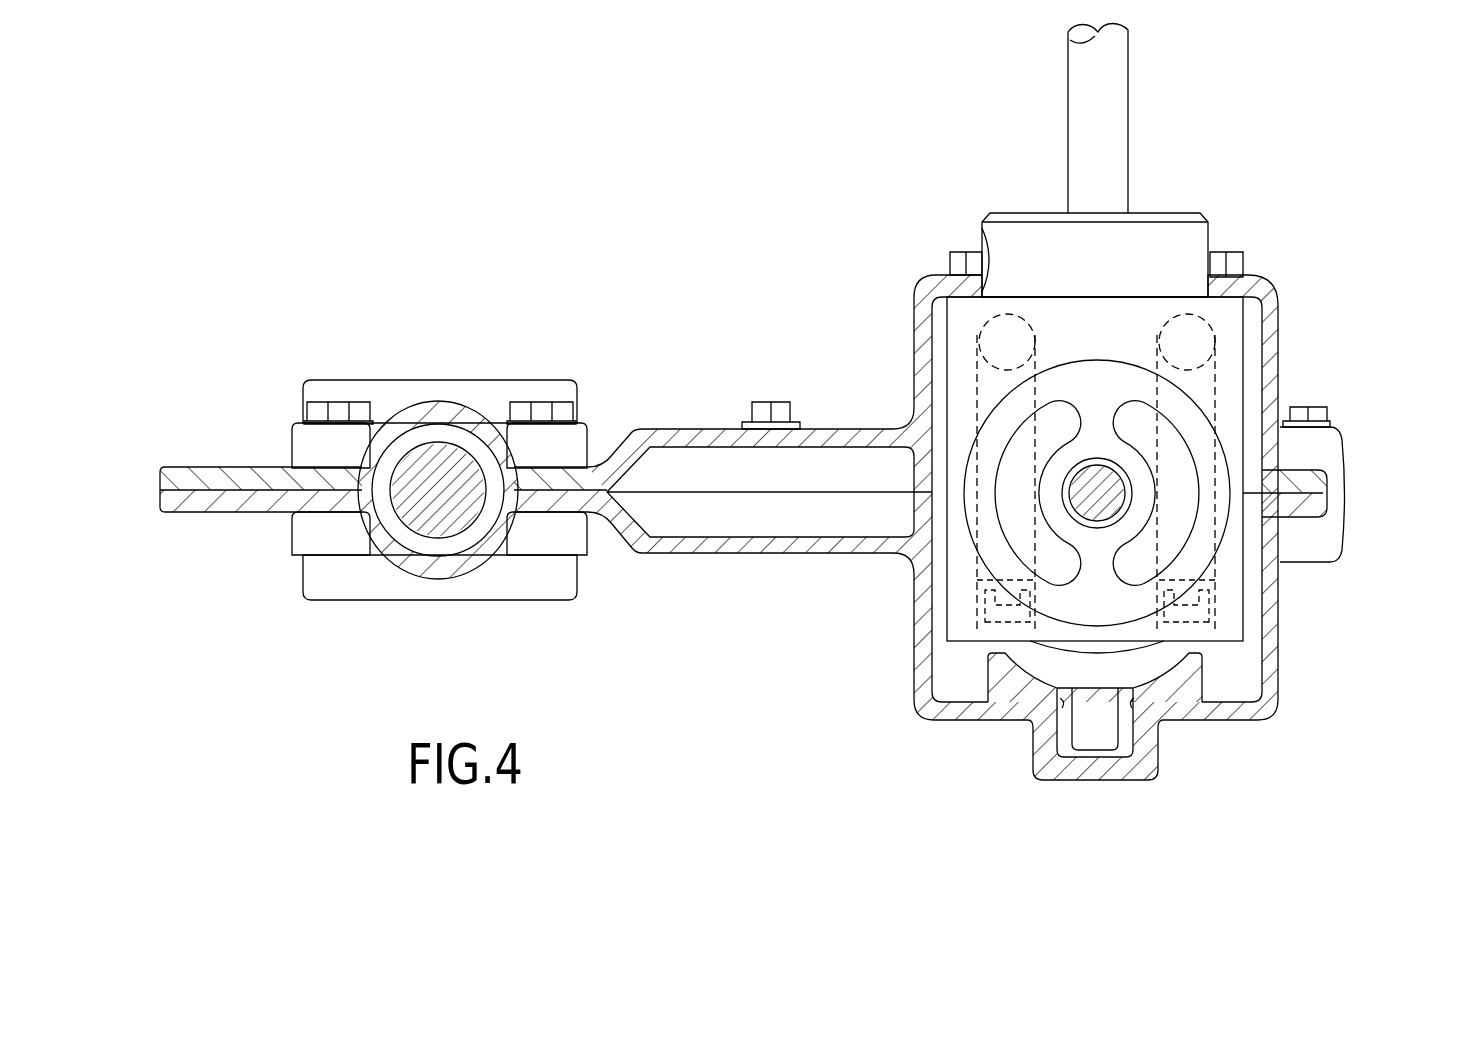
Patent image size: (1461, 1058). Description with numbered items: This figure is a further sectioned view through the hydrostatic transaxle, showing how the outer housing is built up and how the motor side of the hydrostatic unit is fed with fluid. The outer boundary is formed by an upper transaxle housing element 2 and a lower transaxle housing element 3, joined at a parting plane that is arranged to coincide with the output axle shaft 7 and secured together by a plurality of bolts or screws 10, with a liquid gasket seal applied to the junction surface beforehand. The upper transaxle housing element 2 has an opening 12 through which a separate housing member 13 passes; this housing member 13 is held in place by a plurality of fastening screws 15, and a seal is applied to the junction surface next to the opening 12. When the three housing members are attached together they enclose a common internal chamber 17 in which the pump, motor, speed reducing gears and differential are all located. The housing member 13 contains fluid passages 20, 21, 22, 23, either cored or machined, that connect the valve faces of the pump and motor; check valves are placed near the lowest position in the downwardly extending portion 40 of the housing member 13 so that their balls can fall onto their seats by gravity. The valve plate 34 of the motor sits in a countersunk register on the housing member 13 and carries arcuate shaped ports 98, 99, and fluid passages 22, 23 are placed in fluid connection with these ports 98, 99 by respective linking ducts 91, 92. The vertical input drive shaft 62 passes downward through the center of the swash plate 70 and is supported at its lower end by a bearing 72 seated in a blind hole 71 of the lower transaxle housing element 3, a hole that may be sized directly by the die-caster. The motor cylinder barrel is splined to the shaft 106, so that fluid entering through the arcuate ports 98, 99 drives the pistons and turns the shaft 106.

The upper transaxle housing element 2 is at (207, 480).
The lower transaxle housing element 3 is at (233, 505).
The output axle shaft 7 is at (437, 502).
The bolts or screws 10 is at (340, 413).
The opening 12 is at (980, 230).
The housing member 13 is at (1113, 267).
The fastening screws 15 is at (1233, 258).
The internal chamber 17 is at (940, 485).
The fluid passage 20 is at (982, 327).
The fluid passage 21 is at (1210, 320).
The fluid passage 22 is at (973, 400).
The fluid passage 23 is at (1218, 382).
The valve plate 34 is at (1113, 405).
The downwardly extending portion 40 is at (963, 423).
The input drive shaft 62 is at (1116, 98).
The swash plate 70 is at (1103, 672).
The blind hole 71 is at (1135, 705).
The bearing 72 is at (1047, 745).
The linking duct 91 is at (1053, 558).
The linking duct 92 is at (1167, 527).
The arcuate-shaped port 98 is at (1045, 570).
The arcuate-shaped port 99 is at (1173, 580).
The shaft 106 is at (1087, 488).